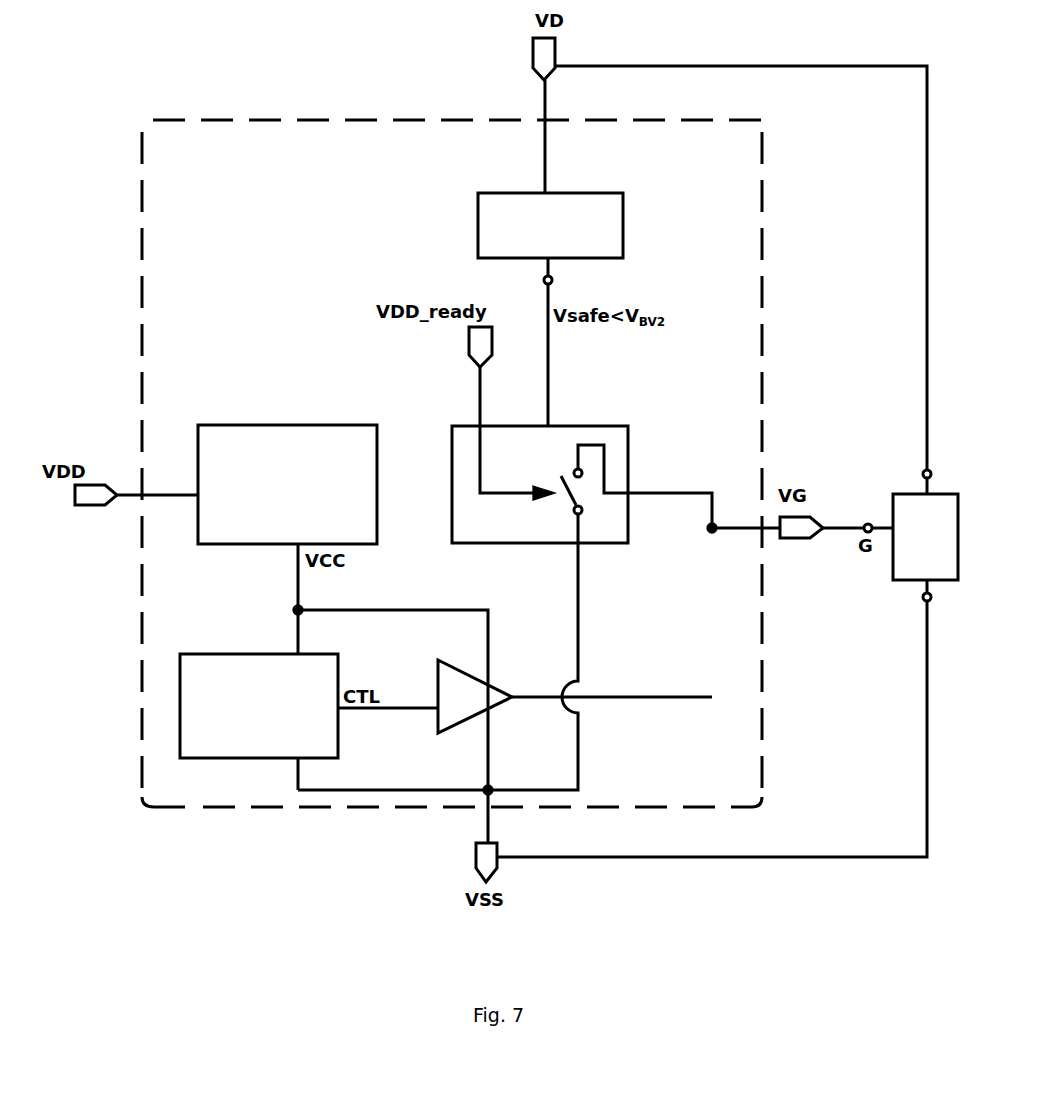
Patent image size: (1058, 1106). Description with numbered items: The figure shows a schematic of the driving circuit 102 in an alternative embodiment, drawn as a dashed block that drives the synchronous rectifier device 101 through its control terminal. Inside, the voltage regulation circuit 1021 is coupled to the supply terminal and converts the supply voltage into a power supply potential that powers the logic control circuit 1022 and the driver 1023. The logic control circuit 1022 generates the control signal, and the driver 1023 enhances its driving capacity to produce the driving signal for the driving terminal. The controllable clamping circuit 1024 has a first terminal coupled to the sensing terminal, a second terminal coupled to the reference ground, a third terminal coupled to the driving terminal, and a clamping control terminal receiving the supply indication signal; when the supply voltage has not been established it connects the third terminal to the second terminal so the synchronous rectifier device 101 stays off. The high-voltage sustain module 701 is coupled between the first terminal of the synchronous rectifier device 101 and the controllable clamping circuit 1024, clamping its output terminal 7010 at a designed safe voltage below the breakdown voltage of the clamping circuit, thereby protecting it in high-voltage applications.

The driving circuit 102 is at (236, 120).
The high-voltage sustain module 701 is at (478, 212).
The output terminal of the high-voltage sustain module 7010 is at (553, 282).
The controllable clamping circuit 1024 is at (590, 426).
The synchronous rectifier device 101 is at (727, 660).
The voltage regulation circuit 1021 is at (314, 425).
The logic control circuit 1022 is at (240, 654).
The driver 1023 is at (434, 681).